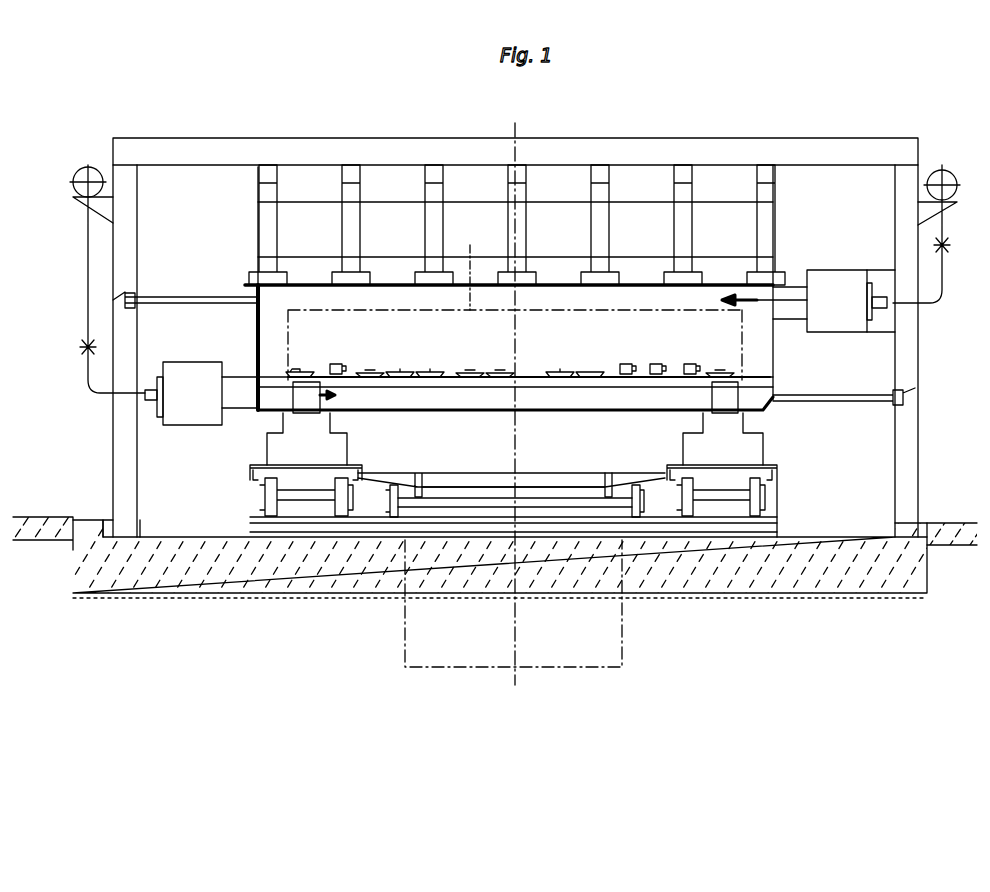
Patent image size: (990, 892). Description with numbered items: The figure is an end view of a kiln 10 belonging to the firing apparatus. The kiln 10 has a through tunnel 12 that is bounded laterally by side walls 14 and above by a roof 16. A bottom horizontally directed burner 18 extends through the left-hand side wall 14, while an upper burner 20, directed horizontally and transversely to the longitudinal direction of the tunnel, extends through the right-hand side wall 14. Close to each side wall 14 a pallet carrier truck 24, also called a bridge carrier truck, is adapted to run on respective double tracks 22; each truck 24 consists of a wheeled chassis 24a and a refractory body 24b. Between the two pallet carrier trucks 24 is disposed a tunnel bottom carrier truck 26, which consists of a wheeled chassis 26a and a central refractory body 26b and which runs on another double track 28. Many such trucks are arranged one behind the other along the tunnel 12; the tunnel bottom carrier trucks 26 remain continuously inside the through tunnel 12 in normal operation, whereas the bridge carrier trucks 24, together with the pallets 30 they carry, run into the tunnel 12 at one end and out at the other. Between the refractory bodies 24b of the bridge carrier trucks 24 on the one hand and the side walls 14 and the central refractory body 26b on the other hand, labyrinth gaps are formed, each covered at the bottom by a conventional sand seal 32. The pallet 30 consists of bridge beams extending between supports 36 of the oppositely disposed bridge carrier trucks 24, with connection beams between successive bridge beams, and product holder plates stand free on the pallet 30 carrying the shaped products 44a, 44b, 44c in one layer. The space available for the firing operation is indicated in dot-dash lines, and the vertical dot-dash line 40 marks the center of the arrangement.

The kiln 10 is at (644, 130).
The through tunnel 12 is at (815, 373).
The side walls 14 is at (258, 315).
The roof 16 is at (388, 290).
The bottom horizontally directed burner 18 is at (187, 375).
The upper burner 20 is at (832, 285).
The double tracks 22 is at (275, 520).
The pallet carrier truck 24 is at (519, 472).
The wheeled chassis 24a is at (292, 487).
The refractory body 24b is at (320, 448).
The tunnel bottom carrier truck 26 is at (507, 486).
The wheeled chassis 26a is at (507, 566).
The central refractory body 26b is at (598, 445).
The double track 28 is at (392, 520).
The pallet 30 is at (548, 372).
The sand seal 32 is at (253, 473).
The supports 36 is at (302, 395).
The center line 40 is at (470, 267).
The shaped products 44a is at (403, 372).
The shaped products 44b is at (465, 372).
The shaped products 44c is at (336, 372).